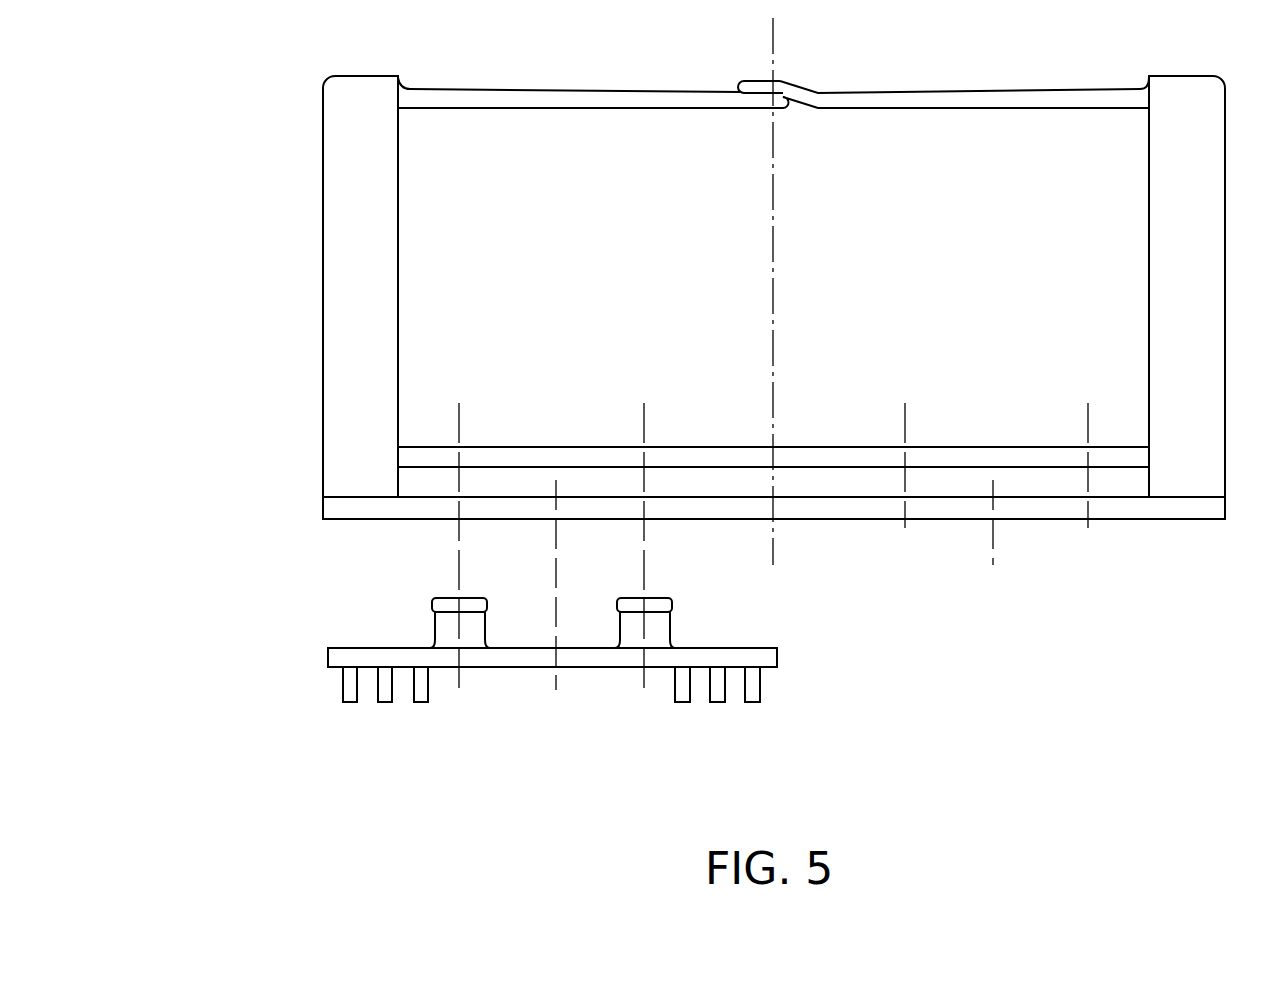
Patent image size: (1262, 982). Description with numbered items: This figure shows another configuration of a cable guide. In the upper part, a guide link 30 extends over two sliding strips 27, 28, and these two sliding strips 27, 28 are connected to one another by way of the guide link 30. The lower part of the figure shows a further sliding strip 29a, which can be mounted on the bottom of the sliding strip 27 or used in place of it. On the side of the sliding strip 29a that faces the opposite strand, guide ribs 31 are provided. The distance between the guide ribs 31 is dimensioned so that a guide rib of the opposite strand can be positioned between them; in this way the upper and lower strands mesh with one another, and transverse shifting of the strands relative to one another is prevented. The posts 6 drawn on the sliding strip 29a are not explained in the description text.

The guide link 30 is at (685, 338).
The sliding strip 27 is at (347, 510).
The sliding strip 28 is at (860, 503).
The sliding strip 29a is at (510, 650).
The post 6 is at (631, 630).
The guide ribs 31 is at (720, 682).